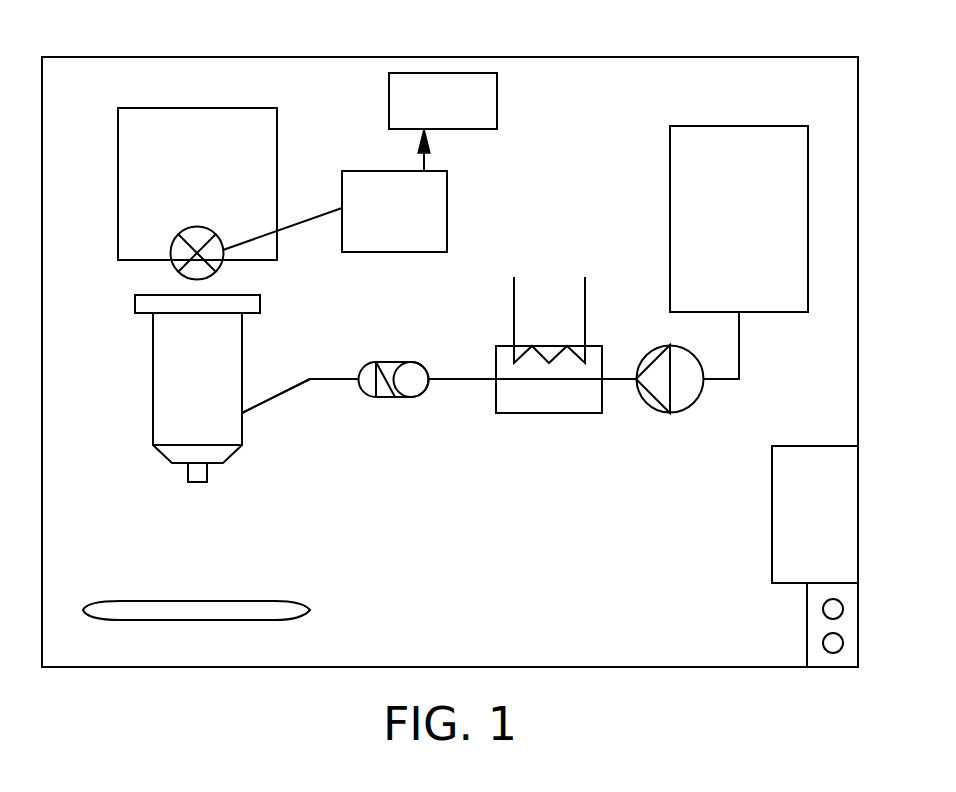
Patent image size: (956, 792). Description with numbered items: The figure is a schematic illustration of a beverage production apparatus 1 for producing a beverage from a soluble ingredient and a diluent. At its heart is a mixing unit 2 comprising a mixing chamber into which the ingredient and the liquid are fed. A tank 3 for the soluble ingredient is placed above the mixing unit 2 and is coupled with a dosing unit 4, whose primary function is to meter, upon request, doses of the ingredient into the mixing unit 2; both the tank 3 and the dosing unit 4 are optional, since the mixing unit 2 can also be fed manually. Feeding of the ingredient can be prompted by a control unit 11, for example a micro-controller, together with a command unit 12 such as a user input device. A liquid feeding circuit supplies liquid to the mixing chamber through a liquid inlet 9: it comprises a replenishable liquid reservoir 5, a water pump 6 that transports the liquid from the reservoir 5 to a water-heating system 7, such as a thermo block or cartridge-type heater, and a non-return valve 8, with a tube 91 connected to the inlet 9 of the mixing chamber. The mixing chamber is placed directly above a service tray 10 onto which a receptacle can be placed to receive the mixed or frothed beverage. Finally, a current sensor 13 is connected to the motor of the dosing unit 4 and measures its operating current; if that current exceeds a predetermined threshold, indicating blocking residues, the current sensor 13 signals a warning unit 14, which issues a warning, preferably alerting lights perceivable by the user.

The beverage production apparatus 1 is at (722, 57).
The mixing unit 2 is at (153, 379).
The tank 3 is at (277, 133).
The dosing unit 4 is at (197, 226).
The liquid reservoir 5 is at (670, 218).
The water pump 6 is at (670, 413).
The water-heating system 7 is at (550, 413).
The non-return valve 8 is at (395, 362).
The liquid inlet 9 is at (244, 415).
The tube 91 is at (285, 391).
The service tray 10 is at (310, 610).
The control unit 11 is at (772, 514).
The command unit 12 is at (807, 623).
The current sensor 13 is at (447, 210).
The warning unit 14 is at (497, 100).